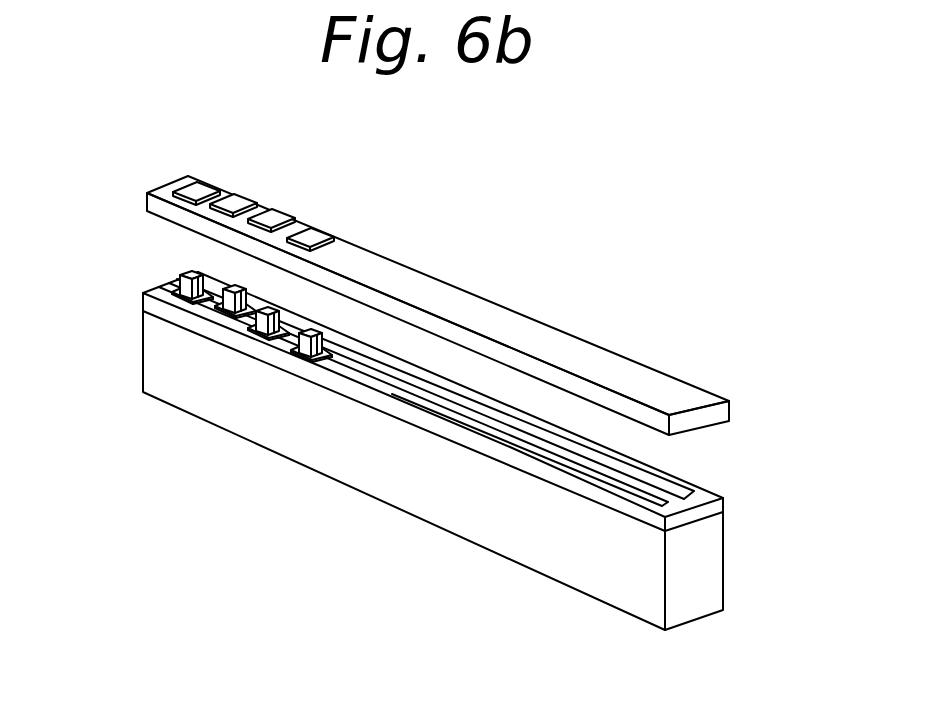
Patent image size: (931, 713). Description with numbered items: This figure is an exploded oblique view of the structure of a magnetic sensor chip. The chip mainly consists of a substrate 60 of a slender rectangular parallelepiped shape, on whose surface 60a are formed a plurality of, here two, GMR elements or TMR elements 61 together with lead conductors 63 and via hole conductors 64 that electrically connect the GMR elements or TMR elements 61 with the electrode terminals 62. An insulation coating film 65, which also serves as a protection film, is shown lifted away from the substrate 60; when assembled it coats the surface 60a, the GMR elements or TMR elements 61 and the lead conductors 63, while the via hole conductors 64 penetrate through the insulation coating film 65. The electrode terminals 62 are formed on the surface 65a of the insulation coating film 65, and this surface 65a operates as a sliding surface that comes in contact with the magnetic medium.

The substrate 60 is at (163, 345).
The surface of the substrate 60a is at (716, 495).
The GMR elements or TMR elements 61 is at (633, 473).
The electrode terminals 62 is at (313, 238).
The lead conductors 63 is at (418, 393).
The via hole conductors 64 is at (308, 332).
The insulation coating film 65 is at (157, 207).
The surface of the insulation coating film 65a is at (422, 282).